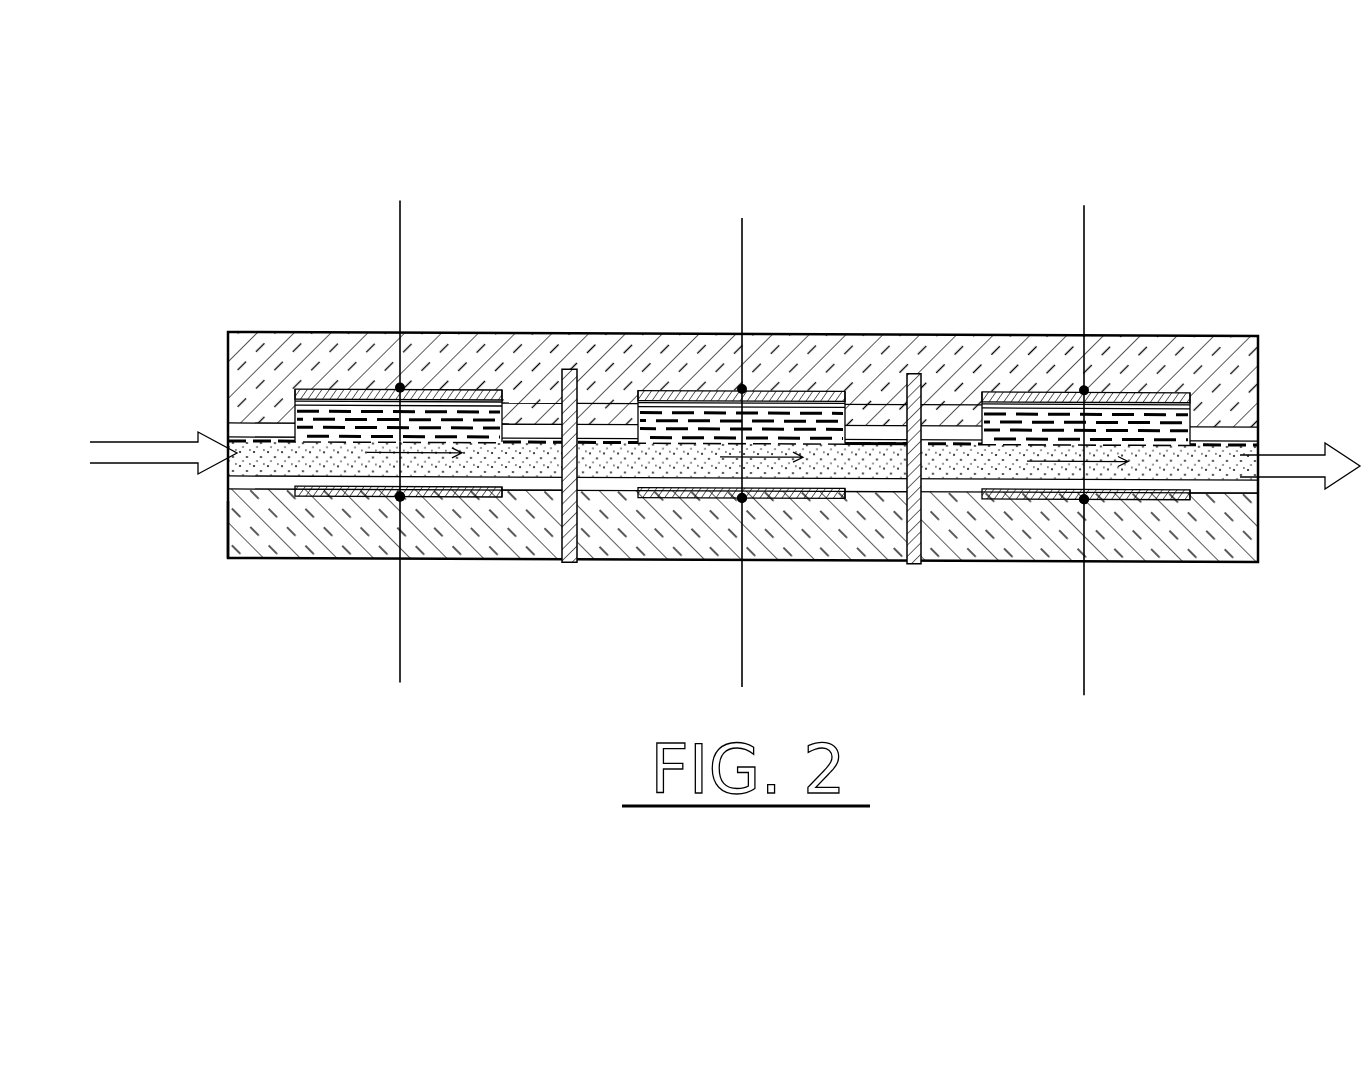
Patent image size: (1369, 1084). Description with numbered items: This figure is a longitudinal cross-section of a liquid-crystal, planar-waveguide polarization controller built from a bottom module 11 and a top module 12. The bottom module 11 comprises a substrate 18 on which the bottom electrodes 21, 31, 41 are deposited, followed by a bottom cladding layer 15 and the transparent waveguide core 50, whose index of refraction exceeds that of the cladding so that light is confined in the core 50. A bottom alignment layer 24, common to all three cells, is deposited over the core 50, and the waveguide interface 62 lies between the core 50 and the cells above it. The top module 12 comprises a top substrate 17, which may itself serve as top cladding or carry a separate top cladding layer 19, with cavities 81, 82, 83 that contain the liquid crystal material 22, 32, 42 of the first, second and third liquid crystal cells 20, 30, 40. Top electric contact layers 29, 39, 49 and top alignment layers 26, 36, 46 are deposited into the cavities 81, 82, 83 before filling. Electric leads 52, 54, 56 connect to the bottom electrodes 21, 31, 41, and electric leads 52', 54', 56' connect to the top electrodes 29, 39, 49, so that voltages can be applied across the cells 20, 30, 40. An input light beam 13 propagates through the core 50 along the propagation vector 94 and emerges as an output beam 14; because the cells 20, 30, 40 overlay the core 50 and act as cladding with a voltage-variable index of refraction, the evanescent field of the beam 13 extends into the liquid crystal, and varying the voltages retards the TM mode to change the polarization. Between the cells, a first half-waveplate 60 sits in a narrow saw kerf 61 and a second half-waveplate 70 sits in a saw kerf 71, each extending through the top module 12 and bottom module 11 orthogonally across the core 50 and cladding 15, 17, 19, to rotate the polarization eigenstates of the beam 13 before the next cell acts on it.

The bottom module 11 is at (1266, 527).
The top module 12 is at (1262, 380).
The input light beam 13 is at (143, 441).
The output beam 14 is at (1297, 455).
The bottom cladding layer 15 is at (1260, 487).
The top substrate 17 is at (228, 371).
The substrate 18 is at (228, 535).
The top cladding layer 19 is at (228, 424).
The first liquid crystal cell 20 is at (351, 428).
The bottom electrode 21 is at (334, 497).
The liquid crystal material 22 is at (377, 403).
The bottom alignment layer 24 is at (266, 437).
The top alignment layer 26 is at (504, 423).
The top electric contact layer 29 is at (327, 418).
The second liquid crystal cell 30 is at (730, 445).
The bottom electrode 31 is at (700, 498).
The liquid crystal material 32 is at (693, 392).
The top alignment layer 36 is at (846, 408).
The top electric contact layer 39 is at (808, 392).
The third liquid crystal cell 40 is at (1056, 448).
The bottom electrode 41 is at (1034, 500).
The liquid crystal material 42 is at (1027, 412).
The top alignment layer 46 is at (1197, 408).
The top electric contact layer 49 is at (1142, 392).
The waveguide core 50 is at (228, 468).
The electric lead 52 is at (364, 561).
The electric lead 52' is at (351, 317).
The electric lead 54 is at (704, 565).
The electric lead 54' is at (702, 323).
The electric lead 56 is at (1051, 569).
The electric lead 56' is at (1046, 324).
The first half-waveplate 60 is at (560, 392).
The saw kerf 61 is at (570, 562).
The waveguide interface 62 is at (300, 490).
The second half-waveplate 70 is at (875, 432).
The saw kerf 71 is at (913, 562).
The cavity 81 is at (516, 500).
The cavity 82 is at (818, 500).
The cavity 83 is at (1158, 500).
The propagation vector 94 is at (412, 498).